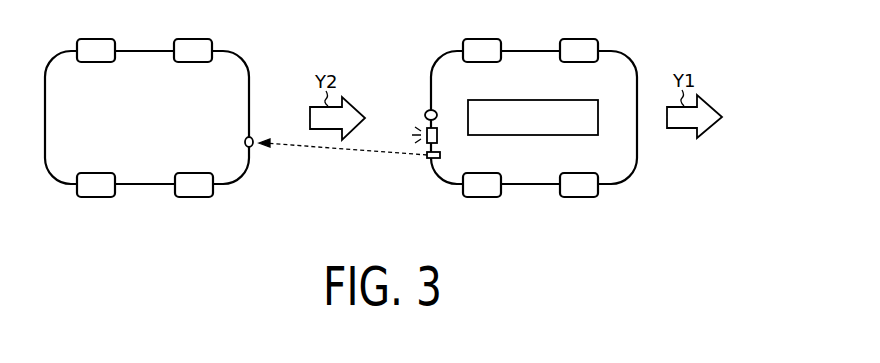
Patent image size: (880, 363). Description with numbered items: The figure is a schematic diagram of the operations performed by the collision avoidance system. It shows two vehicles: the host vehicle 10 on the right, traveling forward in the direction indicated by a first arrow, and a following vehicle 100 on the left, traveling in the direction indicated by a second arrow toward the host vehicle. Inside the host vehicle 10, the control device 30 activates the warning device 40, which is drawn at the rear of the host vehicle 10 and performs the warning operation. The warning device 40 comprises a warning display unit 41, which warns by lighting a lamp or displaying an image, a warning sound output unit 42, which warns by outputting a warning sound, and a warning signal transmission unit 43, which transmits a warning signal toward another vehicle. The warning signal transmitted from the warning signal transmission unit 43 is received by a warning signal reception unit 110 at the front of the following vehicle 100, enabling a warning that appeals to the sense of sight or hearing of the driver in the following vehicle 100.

The host vehicle 10 is at (525, 51).
The control device 30 is at (525, 100).
The warning device 40 is at (436, 138).
The warning display unit 41 is at (427, 112).
The warning sound output unit 42 is at (427, 130).
The warning signal transmission unit 43 is at (429, 158).
The following vehicle 100 is at (139, 51).
The warning signal reception unit 110 is at (252, 148).